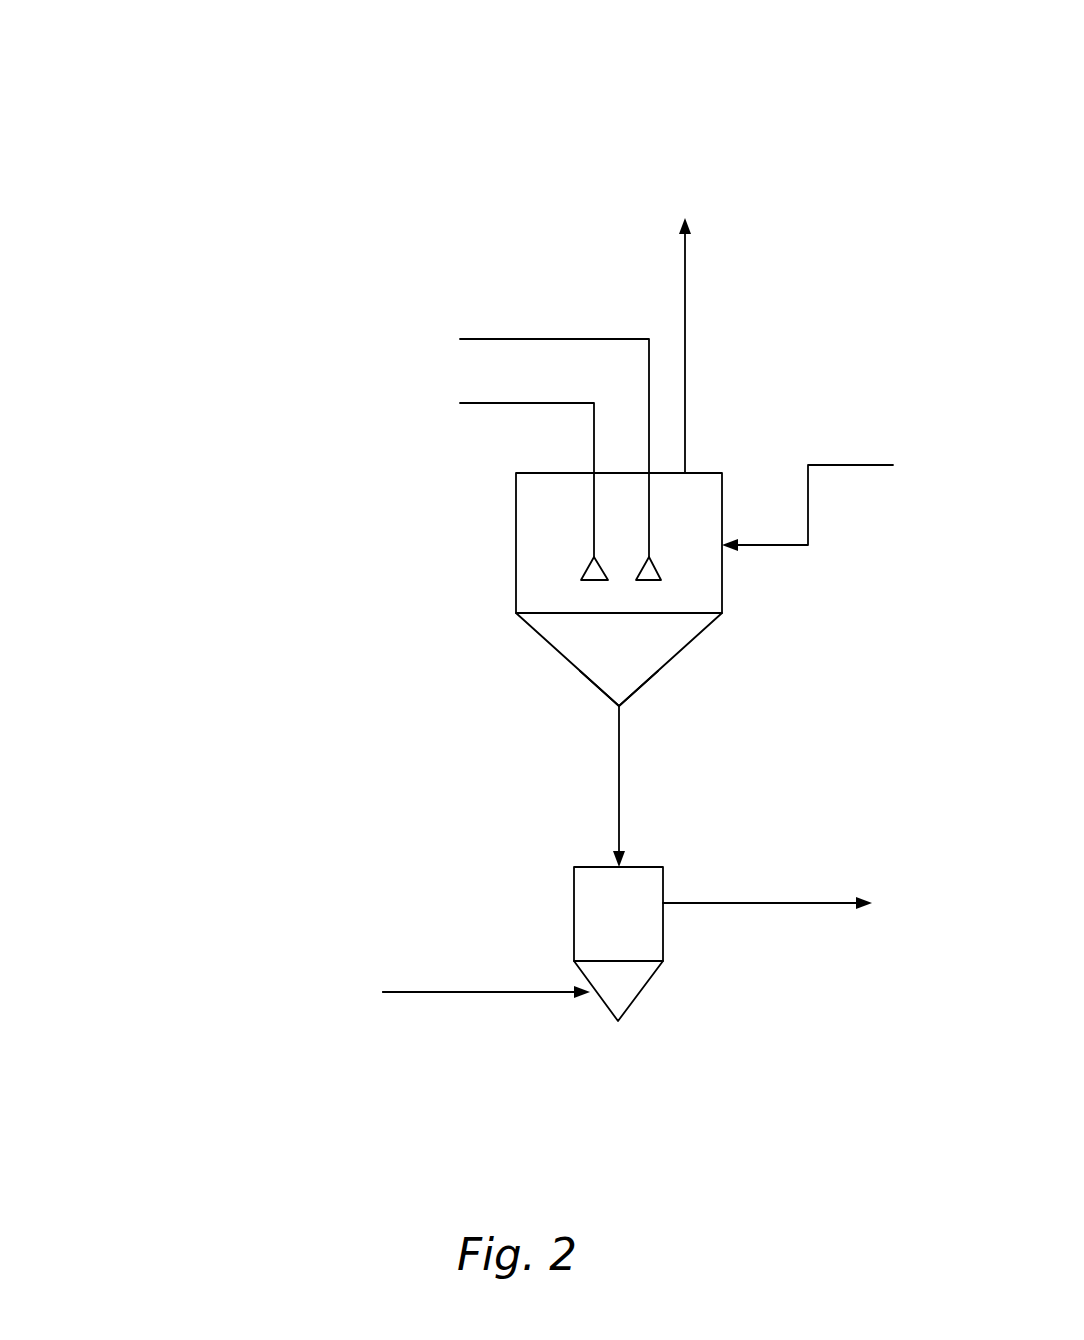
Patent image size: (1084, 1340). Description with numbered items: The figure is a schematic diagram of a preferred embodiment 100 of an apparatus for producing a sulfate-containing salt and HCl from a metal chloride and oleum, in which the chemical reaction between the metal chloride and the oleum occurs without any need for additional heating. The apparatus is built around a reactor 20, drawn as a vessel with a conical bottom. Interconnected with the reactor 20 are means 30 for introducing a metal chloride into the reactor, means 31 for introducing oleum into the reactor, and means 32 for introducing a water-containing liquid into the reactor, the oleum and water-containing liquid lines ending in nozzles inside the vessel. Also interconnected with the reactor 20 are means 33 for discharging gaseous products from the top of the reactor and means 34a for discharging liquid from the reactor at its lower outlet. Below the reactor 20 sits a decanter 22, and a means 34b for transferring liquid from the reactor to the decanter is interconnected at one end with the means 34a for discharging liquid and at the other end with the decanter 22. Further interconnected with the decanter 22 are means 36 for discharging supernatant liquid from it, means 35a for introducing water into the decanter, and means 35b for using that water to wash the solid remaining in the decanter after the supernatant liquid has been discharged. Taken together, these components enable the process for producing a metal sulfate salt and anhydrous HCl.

The apparatus 100 is at (278, 240).
The reactor 20 is at (552, 538).
The decanter 22 is at (598, 912).
The means for introducing a metal chloride into the reactor 30 is at (837, 495).
The means for introducing oleum into the reactor 31 is at (535, 447).
The means for introducing a water-containing liquid into the reactor 32 is at (509, 479).
The means for discharging gaseous products from the reactor 33 is at (710, 345).
The means for discharging liquid from the reactor 34a is at (632, 682).
The means for transferring liquid from the reactor to the decanter 34b is at (617, 742).
The means for introducing water into the decanter 35a is at (486, 962).
The means for using water to wash the solid remaining in the decanter 35b is at (479, 1020).
The means for discharging supernatant liquid from the decanter 36 is at (767, 875).